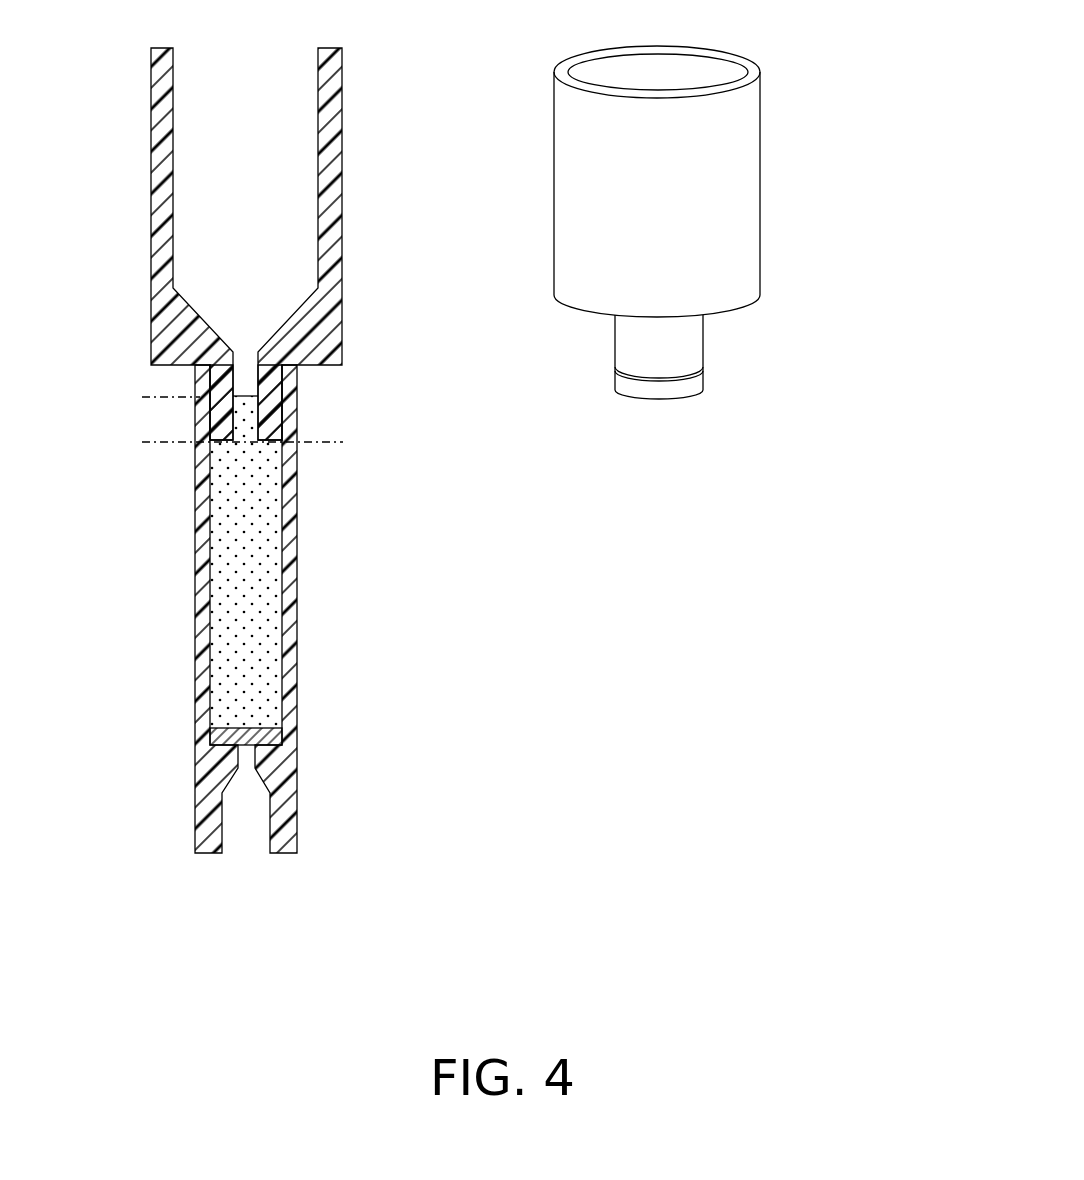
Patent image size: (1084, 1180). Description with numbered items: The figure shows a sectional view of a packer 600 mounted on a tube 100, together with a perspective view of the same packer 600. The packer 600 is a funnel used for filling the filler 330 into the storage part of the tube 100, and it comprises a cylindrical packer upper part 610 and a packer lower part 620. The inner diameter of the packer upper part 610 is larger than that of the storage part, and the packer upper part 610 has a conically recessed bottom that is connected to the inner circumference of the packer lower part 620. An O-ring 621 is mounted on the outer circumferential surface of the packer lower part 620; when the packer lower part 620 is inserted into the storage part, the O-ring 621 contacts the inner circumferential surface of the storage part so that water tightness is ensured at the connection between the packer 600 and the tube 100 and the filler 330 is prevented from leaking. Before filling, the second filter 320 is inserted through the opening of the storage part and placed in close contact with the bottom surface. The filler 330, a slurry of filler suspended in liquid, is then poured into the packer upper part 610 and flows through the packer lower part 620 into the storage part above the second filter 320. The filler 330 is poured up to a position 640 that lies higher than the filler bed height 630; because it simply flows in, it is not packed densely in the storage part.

The tube 100 is at (299, 575).
The second filter 320 is at (282, 742).
The filler 330 is at (222, 543).
The packer 600 is at (701, 208).
The packer upper part 610 is at (760, 168).
The packer lower part 620 is at (613, 351).
The O-ring 621 is at (283, 405).
The filler bed height 630 is at (217, 443).
The position 640 is at (146, 398).